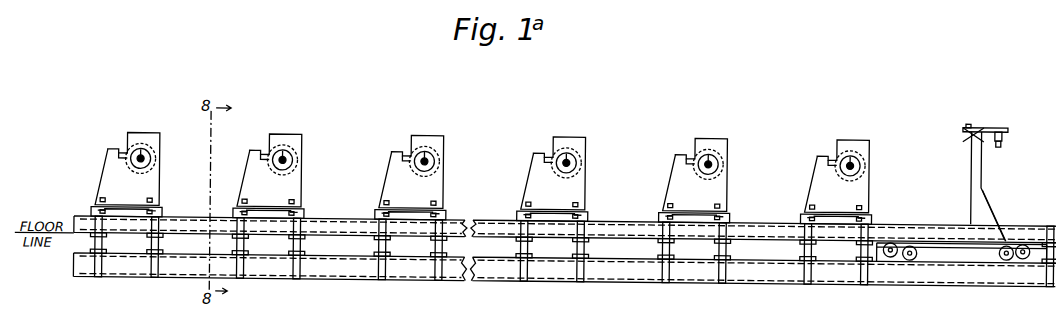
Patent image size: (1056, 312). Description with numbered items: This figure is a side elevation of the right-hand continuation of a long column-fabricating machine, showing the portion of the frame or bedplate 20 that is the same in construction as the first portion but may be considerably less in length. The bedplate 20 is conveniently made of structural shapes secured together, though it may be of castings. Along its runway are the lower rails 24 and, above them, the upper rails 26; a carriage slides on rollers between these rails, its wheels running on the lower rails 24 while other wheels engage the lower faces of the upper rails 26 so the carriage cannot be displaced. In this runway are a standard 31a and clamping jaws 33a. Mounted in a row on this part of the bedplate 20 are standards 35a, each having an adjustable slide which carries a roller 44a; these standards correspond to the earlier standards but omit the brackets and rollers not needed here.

The bedplate 20 is at (327, 271).
The rails 24 is at (344, 255).
The rails 26 is at (325, 229).
The standards 35a is at (287, 181).
The rollers 44a is at (297, 156).
The standard 31a is at (971, 169).
The clamping jaws 33a is at (963, 124).